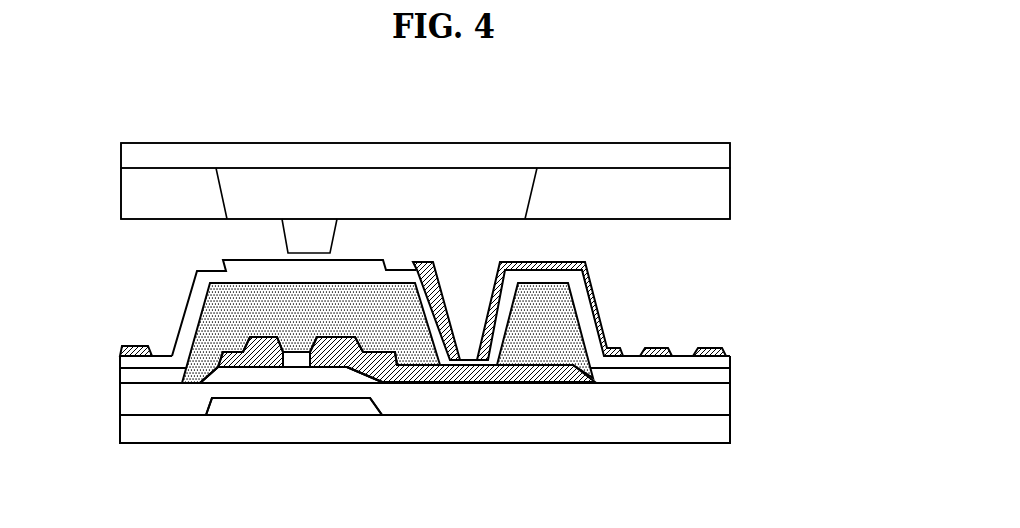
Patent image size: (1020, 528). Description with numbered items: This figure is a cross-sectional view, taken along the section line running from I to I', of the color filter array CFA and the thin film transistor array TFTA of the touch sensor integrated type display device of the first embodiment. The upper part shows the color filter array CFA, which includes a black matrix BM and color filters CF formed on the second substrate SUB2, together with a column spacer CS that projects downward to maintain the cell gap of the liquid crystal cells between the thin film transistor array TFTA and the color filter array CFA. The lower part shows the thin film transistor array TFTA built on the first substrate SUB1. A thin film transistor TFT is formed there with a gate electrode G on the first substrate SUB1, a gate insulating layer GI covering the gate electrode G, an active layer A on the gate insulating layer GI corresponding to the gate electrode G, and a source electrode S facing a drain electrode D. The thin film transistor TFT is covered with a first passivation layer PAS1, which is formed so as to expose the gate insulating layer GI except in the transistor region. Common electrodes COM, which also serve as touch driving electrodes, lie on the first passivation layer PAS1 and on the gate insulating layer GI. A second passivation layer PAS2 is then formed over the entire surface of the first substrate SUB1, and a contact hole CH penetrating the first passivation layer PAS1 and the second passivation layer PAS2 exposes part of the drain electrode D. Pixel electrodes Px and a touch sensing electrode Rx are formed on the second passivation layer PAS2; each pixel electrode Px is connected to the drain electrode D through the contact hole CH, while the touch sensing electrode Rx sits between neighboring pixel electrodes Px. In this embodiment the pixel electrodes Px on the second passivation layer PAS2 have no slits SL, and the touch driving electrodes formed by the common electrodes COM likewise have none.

The color filter array CFA is at (740, 142).
The second substrate SUB2 is at (727, 157).
The color filter CF is at (727, 195).
The black matrix BM is at (386, 183).
The column spacer CS is at (292, 235).
The thin film transistor array TFTA is at (738, 287).
The first substrate SUB1 is at (727, 427).
The gate insulating layer GI is at (727, 400).
The common electrode COM is at (727, 376).
The second passivation layer PAS2 is at (727, 358).
The first passivation layer PAS1 is at (212, 313).
The touch sensing electrode Rx is at (222, 263).
The pixel electrode Px is at (120, 349).
The slit SL is at (633, 352).
The contact hole CH is at (468, 283).
The thin film transistor TFT is at (200, 455).
The source electrode S is at (244, 362).
The gate electrode G is at (285, 405).
The active layer A is at (322, 358).
The drain electrode D is at (542, 381).
The section line start I is at (118, 461).
The section line end I' is at (728, 461).